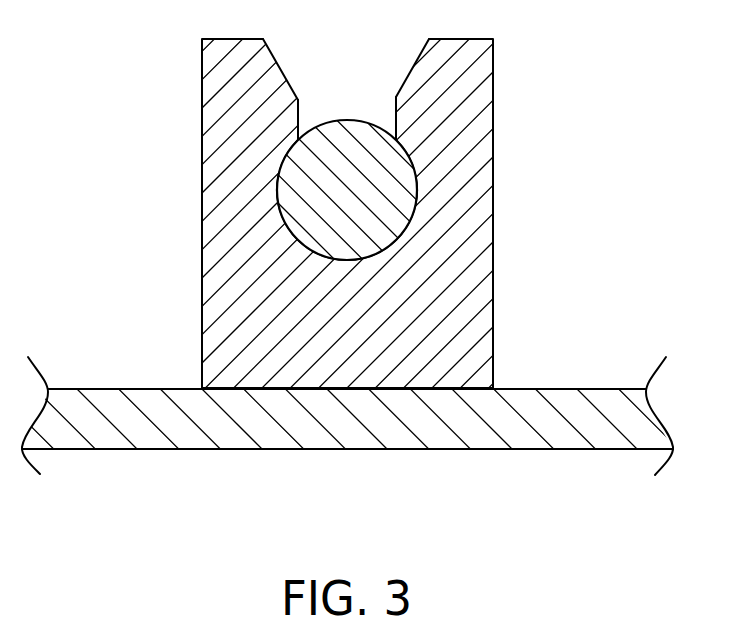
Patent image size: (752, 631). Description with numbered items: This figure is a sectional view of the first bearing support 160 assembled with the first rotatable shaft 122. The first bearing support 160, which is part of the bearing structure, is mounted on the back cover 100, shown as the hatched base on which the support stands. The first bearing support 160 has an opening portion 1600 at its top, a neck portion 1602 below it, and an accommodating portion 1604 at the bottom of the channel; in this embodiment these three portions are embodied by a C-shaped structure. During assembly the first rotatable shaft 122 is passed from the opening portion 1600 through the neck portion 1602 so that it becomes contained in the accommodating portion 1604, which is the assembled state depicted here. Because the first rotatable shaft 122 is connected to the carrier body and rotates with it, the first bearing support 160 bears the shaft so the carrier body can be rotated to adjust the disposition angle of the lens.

The back cover 100 is at (585, 418).
The first rotatable shaft 122 is at (348, 168).
The first bearing support 160 is at (376, 212).
The opening portion 1600 is at (413, 68).
The neck portion 1602 is at (397, 117).
The accommodating portion 1604 is at (443, 200).